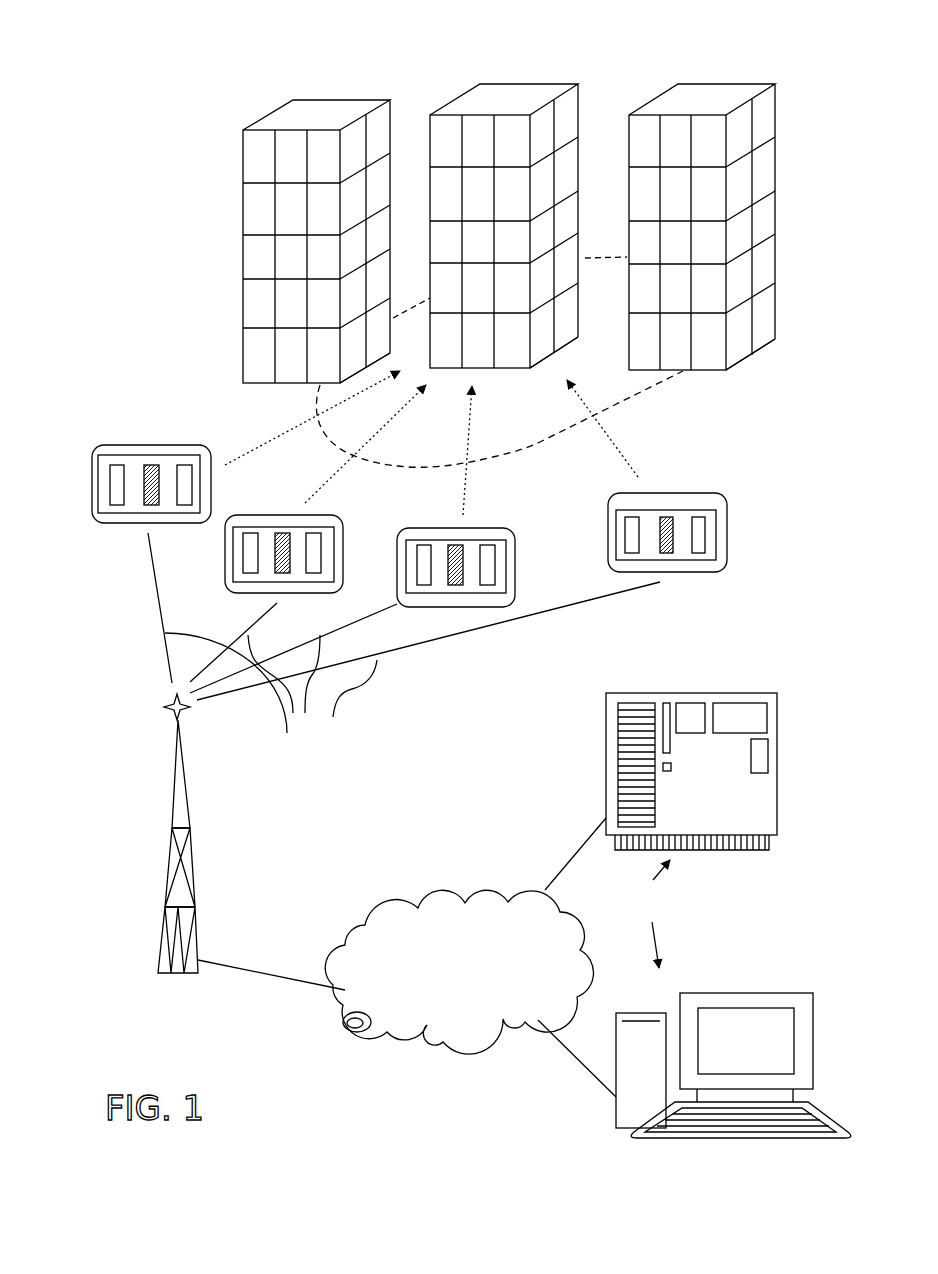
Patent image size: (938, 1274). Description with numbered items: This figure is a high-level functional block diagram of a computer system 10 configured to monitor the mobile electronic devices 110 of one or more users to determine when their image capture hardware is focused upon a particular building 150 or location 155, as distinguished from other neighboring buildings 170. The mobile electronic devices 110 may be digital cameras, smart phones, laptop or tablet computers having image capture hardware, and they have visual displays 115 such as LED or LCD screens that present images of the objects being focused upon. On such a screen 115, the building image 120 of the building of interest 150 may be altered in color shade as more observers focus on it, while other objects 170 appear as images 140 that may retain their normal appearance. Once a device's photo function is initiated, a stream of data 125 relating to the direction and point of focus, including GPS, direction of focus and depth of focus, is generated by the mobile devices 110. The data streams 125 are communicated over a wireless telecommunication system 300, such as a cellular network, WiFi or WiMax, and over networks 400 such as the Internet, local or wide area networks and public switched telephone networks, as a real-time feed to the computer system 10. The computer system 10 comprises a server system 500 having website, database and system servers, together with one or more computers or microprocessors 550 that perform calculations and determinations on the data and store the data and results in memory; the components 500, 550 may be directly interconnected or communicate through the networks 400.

The computer system 10 is at (447, 669).
The mobile electronic device 110 is at (425, 510).
The visual display 115 is at (133, 498).
The building image 120 is at (145, 477).
The data stream 125 is at (287, 733).
The image of other object 140 is at (697, 550).
The particular building 150 is at (513, 100).
The location 155 is at (652, 393).
The neighboring building 170 is at (258, 245).
The wireless telecommunication system 300 is at (170, 780).
The network 400 is at (440, 907).
The server system 500 is at (618, 760).
The computer or microprocessor 550 is at (703, 1000).